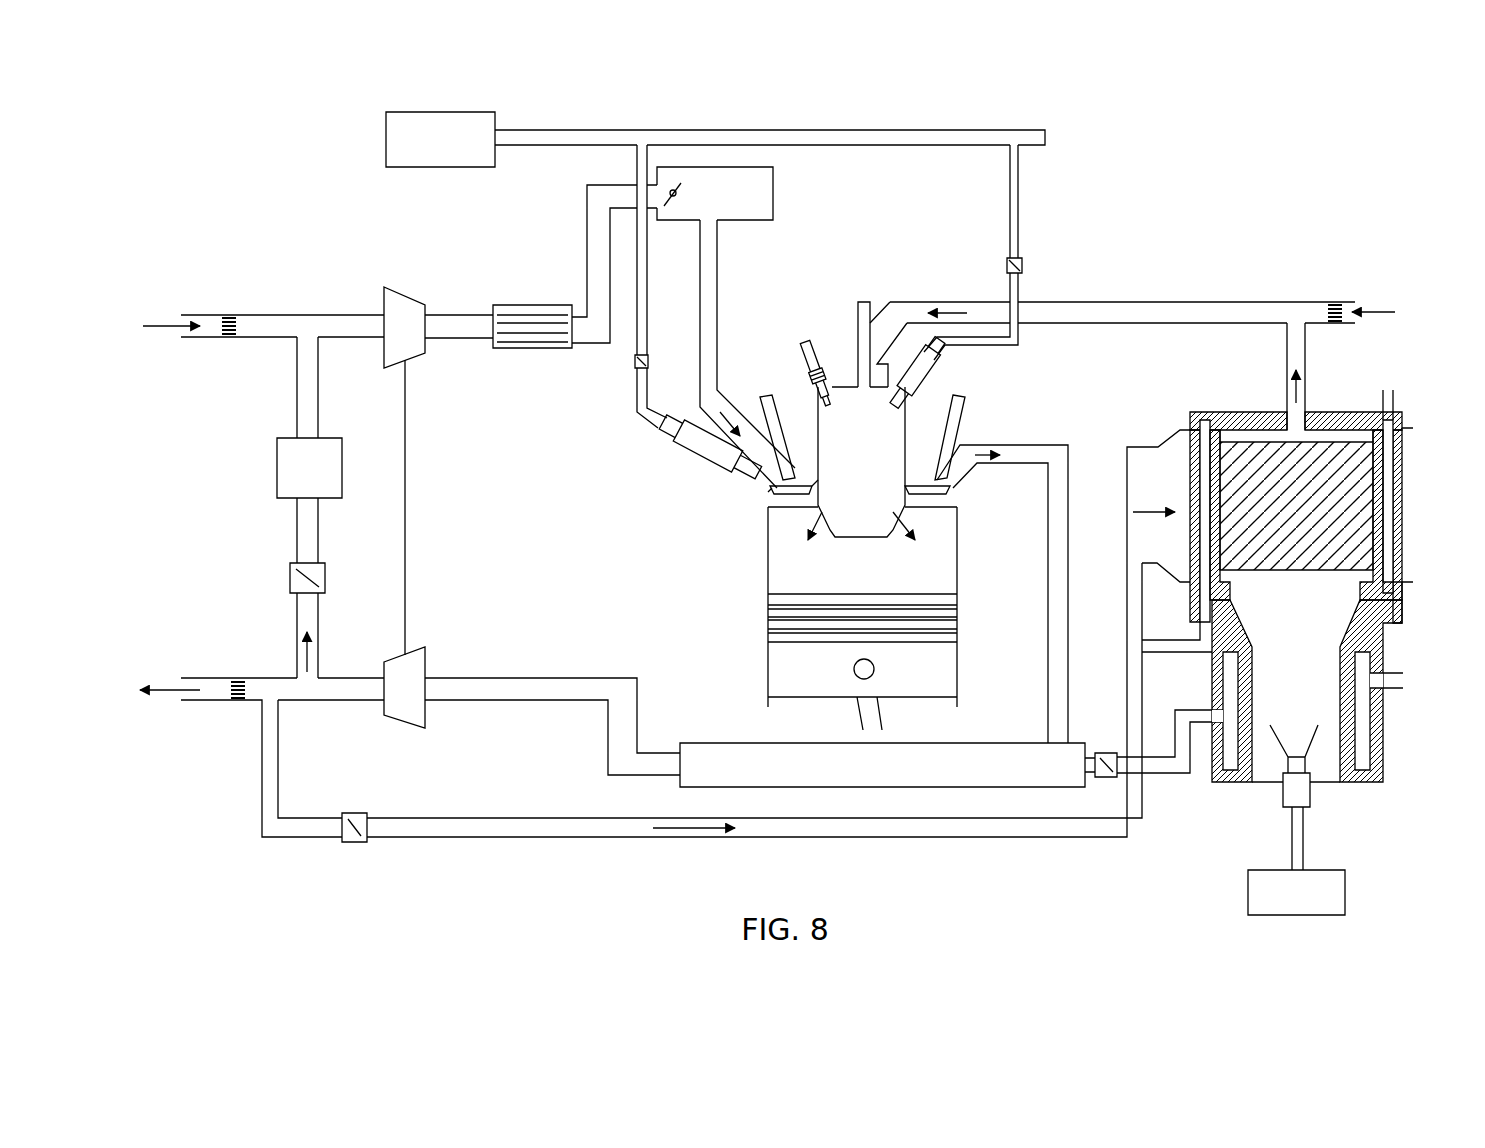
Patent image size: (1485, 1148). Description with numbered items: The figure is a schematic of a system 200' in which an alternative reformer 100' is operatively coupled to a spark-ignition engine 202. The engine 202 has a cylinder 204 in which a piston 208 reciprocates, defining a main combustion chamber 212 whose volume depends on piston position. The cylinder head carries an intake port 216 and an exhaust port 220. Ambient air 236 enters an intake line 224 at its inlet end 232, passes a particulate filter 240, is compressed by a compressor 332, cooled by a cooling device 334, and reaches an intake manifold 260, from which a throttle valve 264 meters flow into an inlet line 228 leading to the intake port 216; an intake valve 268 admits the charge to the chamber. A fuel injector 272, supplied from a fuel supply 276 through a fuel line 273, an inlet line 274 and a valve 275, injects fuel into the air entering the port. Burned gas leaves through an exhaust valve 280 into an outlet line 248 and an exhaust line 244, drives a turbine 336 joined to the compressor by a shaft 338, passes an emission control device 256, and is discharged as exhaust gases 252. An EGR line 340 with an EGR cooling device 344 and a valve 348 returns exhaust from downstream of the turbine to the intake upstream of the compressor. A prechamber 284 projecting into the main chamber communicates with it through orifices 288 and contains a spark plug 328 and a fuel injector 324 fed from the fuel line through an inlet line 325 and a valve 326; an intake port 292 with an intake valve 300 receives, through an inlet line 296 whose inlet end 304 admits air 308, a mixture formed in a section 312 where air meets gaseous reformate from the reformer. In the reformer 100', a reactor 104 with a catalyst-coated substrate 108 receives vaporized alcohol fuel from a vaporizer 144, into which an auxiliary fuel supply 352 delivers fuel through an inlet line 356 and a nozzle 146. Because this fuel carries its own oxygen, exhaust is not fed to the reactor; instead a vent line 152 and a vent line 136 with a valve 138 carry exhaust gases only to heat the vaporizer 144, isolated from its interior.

The reformer 100' is at (1331, 506).
The reactor 104 is at (1380, 500).
The catalyst-coated substrate 108 is at (1375, 548).
The vent line 136 is at (1028, 838).
The valve 138 is at (357, 843).
The vaporizer 144 is at (1378, 722).
The nozzle 146 is at (1305, 788).
The vent line 152 is at (722, 750).
The system 200' is at (1118, 94).
The engine 202 is at (872, 282).
The engine cylinder 204 is at (767, 556).
The piston 208 is at (950, 594).
The main combustion chamber 212 is at (775, 580).
The intake port 216 is at (767, 506).
The exhaust port 220 is at (957, 513).
The intake line 224 is at (585, 252).
The inlet line 228 is at (712, 264).
The inlet end 232 is at (198, 315).
The air 236 is at (150, 326).
The particulate filter 240 is at (229, 338).
The exhaust line 244 is at (627, 775).
The outlet line 248 is at (1013, 444).
The exhaust gases 252 is at (147, 690).
The exhaust emission control device 256 is at (239, 681).
The intake manifold 260 is at (775, 190).
The throttle valve 264 is at (673, 189).
The intake valve 268 is at (770, 492).
The fuel injector 272 is at (698, 448).
The fuel line 273 is at (597, 128).
The inlet line 274 is at (636, 405).
The valve 275 is at (632, 362).
The fuel supply 276 is at (446, 127).
The exhaust valve 280 is at (950, 489).
The prechamber 284 is at (817, 408).
The orifices 288 is at (895, 513).
The intake port 292 is at (848, 372).
The inlet line 296 is at (932, 300).
The intake valve 300 is at (857, 375).
The inlet end 304 is at (1336, 302).
The air 308 is at (1396, 312).
The section 312 is at (1255, 312).
The fuel injector 324 is at (932, 372).
The inlet line 325 is at (1022, 193).
The valve 326 is at (1024, 266).
The spark plug 328 is at (804, 352).
The compressor 332 is at (401, 290).
The cooling device 334 is at (516, 350).
The turbine 336 is at (409, 730).
The shaft 338 is at (405, 520).
The EGR line 340 is at (297, 422).
The EGR cooling device 344 is at (300, 470).
The valve 348 is at (290, 580).
The auxiliary fuel supply 352 is at (1340, 893).
The inlet line 356 is at (1292, 855).